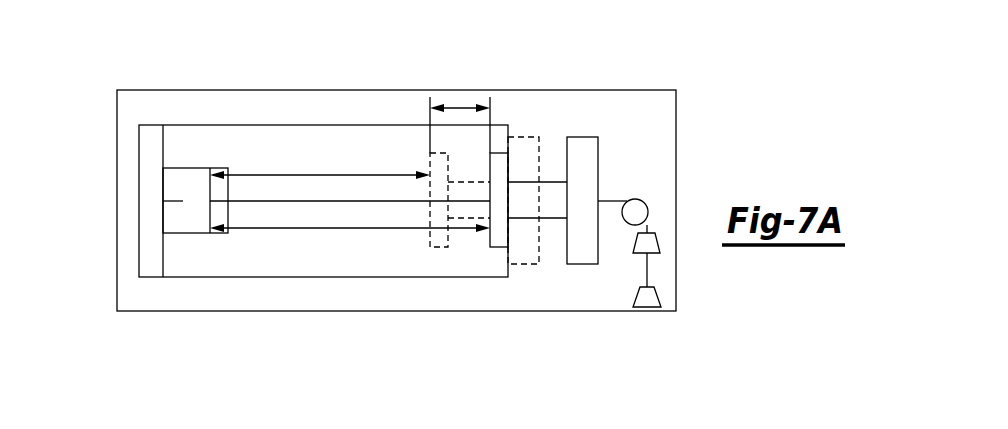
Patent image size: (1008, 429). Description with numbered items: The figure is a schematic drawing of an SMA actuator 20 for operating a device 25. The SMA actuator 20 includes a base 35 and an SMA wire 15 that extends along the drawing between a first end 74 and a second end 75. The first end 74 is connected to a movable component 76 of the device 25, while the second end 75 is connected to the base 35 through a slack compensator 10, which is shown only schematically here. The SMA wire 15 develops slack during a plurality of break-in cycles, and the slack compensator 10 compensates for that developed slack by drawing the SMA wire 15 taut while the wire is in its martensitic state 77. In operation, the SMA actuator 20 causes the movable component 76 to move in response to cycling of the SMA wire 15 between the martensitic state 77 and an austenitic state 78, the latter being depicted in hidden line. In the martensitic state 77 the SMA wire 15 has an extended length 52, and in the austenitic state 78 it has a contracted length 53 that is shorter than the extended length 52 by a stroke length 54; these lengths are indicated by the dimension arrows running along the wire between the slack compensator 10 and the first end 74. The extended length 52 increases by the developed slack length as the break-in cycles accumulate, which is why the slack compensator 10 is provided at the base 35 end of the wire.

The device 25 is at (135, 84).
The SMA actuator 20 is at (194, 120).
The base 35 is at (148, 193).
The slack compensator 10 is at (190, 233).
The second end 75 is at (210, 201).
The SMA wire 15 is at (256, 201).
The contracted length 53 is at (305, 175).
The extended length 52 is at (305, 228).
The stroke length 54 is at (460, 106).
The first end 74 is at (489, 200).
The austenitic state 78 is at (520, 285).
The movable component 76 is at (585, 137).
The martensitic state 77 is at (587, 285).